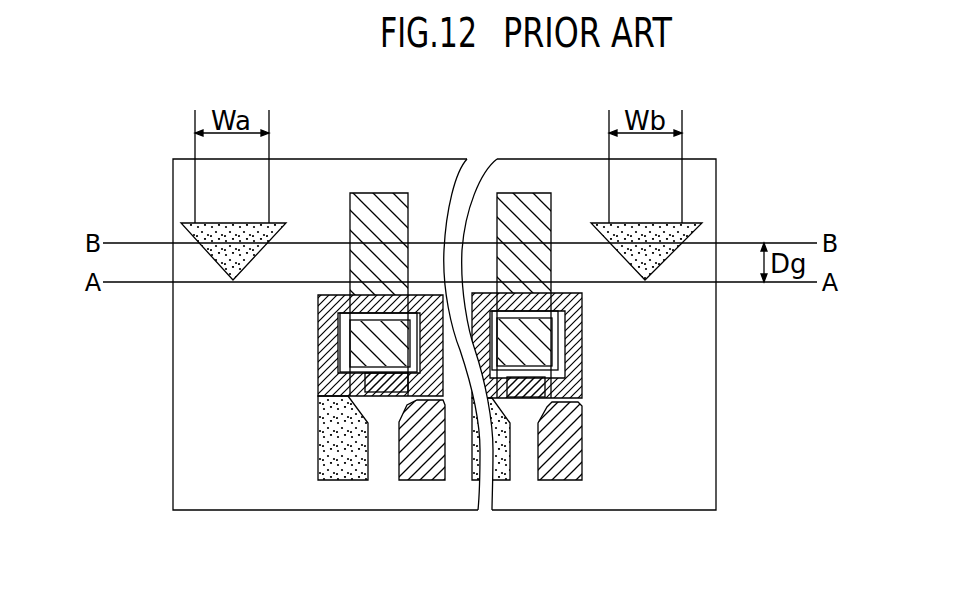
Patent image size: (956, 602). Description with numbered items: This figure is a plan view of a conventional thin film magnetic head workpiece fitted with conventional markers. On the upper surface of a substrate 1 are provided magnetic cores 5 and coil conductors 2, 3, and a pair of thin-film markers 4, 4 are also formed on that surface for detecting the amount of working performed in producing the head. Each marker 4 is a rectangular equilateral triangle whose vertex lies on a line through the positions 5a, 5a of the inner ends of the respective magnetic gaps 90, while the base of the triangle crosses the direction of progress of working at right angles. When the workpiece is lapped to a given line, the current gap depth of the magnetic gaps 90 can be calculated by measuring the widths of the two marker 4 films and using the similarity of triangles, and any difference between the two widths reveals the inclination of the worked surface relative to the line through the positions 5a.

The substrate 1 is at (213, 475).
The coil conductor 2 is at (341, 480).
The coil conductor 3 is at (421, 480).
The marker 4 is at (217, 268).
The magnetic core 5 is at (379, 193).
The position of inner end of magnetic gap 5a is at (352, 286).
The magnetic gap 90 is at (372, 258).